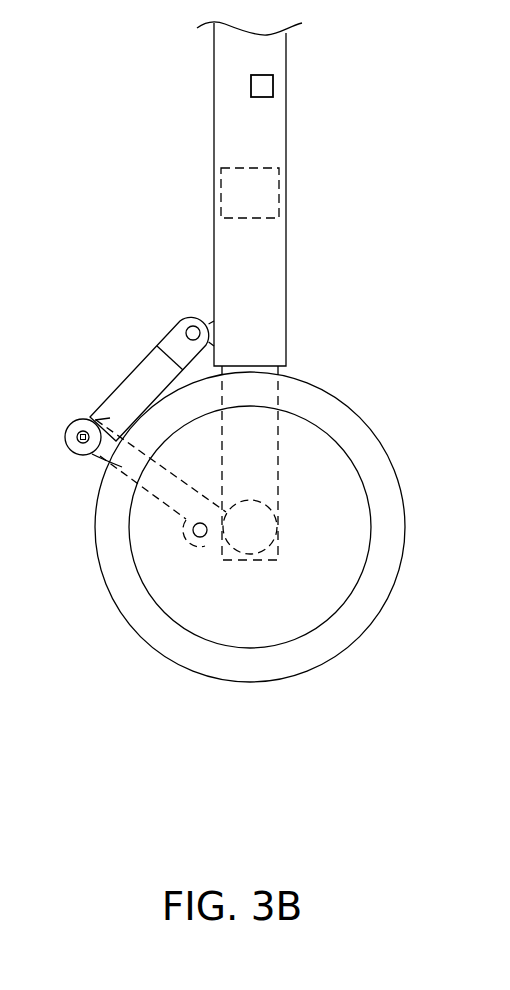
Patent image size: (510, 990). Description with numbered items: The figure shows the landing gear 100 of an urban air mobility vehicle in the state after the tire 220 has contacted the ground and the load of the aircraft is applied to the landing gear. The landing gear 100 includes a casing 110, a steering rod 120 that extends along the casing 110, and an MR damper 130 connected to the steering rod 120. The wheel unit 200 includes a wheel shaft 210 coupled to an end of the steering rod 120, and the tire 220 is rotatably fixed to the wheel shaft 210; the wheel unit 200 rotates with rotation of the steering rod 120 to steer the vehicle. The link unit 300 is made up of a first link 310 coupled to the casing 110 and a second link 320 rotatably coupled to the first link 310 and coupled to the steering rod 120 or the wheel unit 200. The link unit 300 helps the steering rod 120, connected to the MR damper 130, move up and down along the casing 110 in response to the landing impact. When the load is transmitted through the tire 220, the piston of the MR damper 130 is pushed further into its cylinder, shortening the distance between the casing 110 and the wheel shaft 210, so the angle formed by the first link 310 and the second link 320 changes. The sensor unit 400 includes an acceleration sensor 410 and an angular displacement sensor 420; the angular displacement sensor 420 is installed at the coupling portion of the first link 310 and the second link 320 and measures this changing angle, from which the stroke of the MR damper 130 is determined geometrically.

The landing gear 100 is at (305, 291).
The casing 110 is at (274, 262).
The steering rod 120 is at (292, 444).
The MR damper 130 is at (281, 183).
The wheel unit 200 is at (250, 576).
The wheel shaft 210 is at (250, 532).
The tire 220 is at (317, 643).
The link unit 300 is at (138, 389).
The first link 310 is at (142, 382).
The second link 320 is at (82, 420).
The sensor unit 400 is at (236, 466).
The acceleration sensor 410 is at (273, 86).
The angular displacement sensor 420 is at (82, 443).